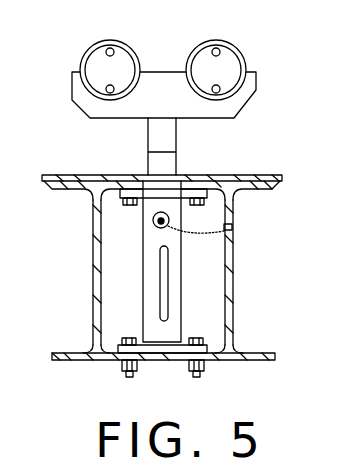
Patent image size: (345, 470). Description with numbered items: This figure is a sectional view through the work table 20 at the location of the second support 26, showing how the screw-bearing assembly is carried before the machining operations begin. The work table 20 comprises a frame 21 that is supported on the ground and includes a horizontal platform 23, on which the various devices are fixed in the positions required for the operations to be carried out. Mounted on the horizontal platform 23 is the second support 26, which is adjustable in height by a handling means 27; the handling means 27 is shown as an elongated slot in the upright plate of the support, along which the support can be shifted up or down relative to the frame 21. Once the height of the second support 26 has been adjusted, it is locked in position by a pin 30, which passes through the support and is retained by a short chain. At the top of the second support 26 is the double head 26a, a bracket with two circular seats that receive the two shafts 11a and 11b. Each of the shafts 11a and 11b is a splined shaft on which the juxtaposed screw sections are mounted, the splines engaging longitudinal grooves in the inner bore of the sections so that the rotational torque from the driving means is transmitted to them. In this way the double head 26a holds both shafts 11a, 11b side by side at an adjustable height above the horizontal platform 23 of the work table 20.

The shaft 11a is at (225, 68).
The shaft 11b is at (100, 63).
The double head 26a is at (95, 108).
The second support 26 is at (179, 167).
The horizontal platform 23 is at (275, 175).
The work table 20 is at (82, 279).
The frame 21 is at (236, 288).
The handling means 27 is at (168, 251).
The pin 30 is at (161, 221).